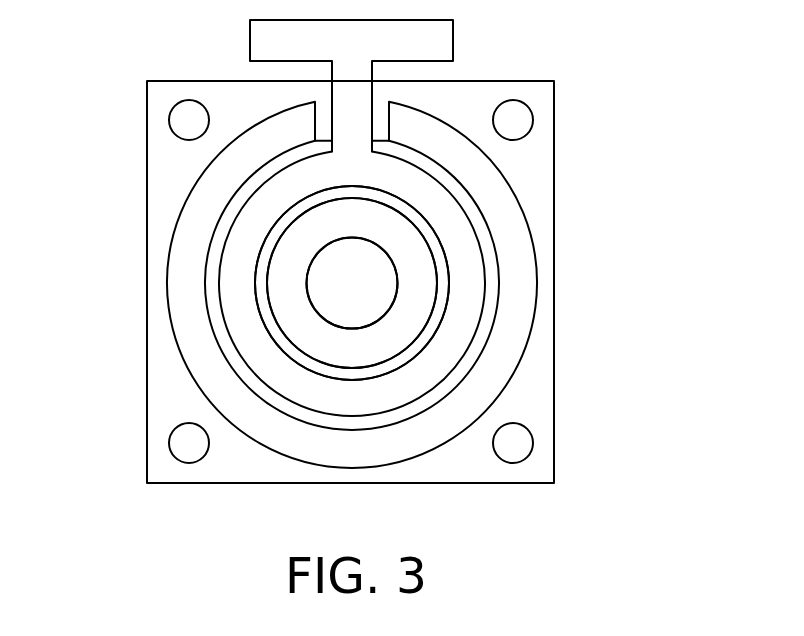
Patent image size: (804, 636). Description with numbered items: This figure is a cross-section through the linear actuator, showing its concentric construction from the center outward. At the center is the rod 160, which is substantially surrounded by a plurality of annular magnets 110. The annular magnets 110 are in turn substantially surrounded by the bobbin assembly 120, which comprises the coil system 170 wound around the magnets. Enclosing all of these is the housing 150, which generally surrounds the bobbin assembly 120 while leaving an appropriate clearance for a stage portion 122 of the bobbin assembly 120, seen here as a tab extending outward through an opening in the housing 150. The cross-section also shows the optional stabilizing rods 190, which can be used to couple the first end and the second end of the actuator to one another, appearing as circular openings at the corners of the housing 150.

The annular magnets 110 is at (285, 268).
The bobbin assembly 120 is at (452, 223).
The stage portion 122 is at (350, 97).
The housing 150 is at (523, 282).
The rod 160 is at (328, 294).
The coil system 170 is at (272, 322).
The stabilizing rods 190 is at (535, 120).